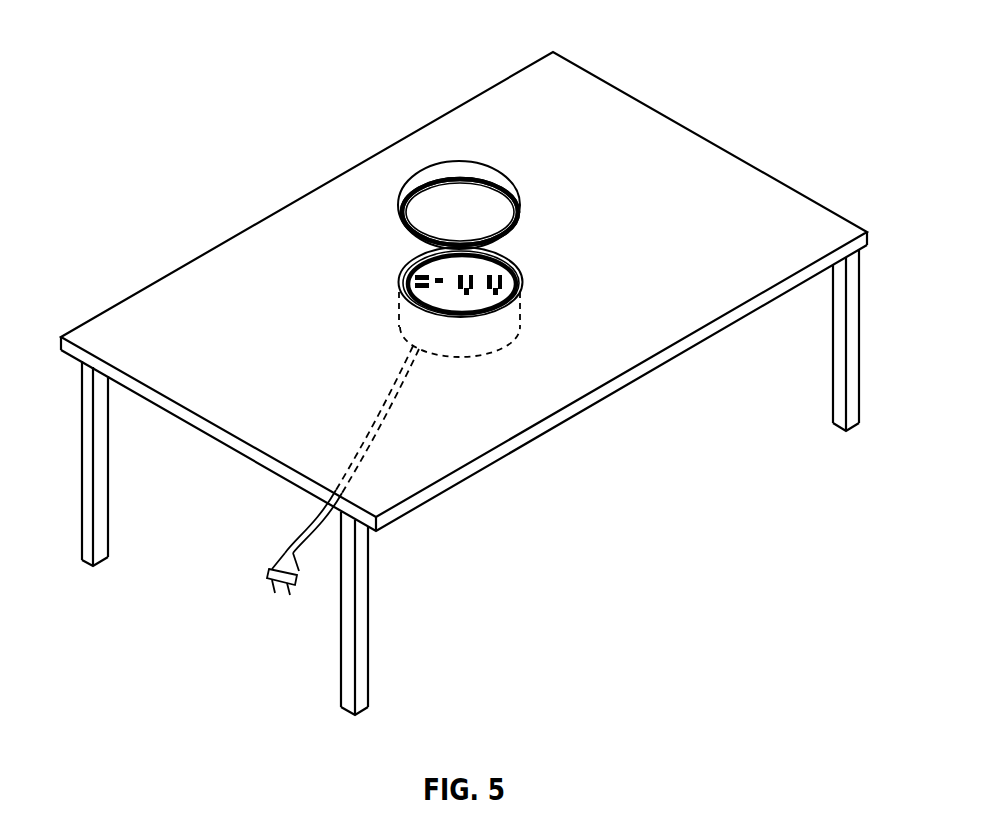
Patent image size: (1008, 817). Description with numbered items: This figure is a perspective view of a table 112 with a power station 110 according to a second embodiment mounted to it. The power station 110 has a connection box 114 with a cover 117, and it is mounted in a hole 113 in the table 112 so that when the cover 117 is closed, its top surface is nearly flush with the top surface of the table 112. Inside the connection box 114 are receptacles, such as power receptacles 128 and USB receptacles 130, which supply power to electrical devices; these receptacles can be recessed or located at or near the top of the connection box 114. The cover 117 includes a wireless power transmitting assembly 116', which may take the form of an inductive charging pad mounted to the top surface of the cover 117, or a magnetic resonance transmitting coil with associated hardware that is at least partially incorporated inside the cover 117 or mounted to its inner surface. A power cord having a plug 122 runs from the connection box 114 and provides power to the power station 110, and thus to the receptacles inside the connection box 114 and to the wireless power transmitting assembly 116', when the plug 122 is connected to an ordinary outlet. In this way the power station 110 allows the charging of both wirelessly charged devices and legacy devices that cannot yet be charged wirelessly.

The power station 110 is at (464, 365).
The table 112 is at (807, 213).
The hole 113 is at (402, 290).
The connection box 114 is at (455, 216).
The wireless power transmitting assembly 116' is at (459, 162).
The cover 117 is at (418, 207).
The plug 122 is at (280, 570).
The power receptacles 128 is at (517, 278).
The USB receptacles 130 is at (415, 281).